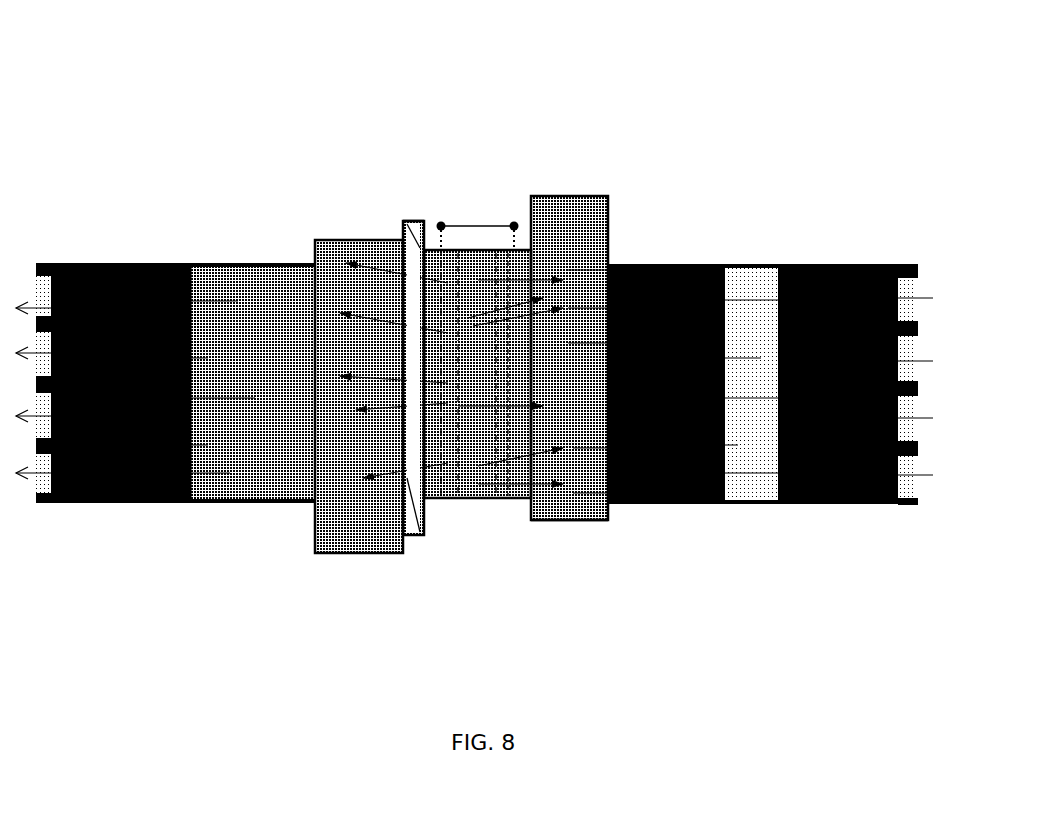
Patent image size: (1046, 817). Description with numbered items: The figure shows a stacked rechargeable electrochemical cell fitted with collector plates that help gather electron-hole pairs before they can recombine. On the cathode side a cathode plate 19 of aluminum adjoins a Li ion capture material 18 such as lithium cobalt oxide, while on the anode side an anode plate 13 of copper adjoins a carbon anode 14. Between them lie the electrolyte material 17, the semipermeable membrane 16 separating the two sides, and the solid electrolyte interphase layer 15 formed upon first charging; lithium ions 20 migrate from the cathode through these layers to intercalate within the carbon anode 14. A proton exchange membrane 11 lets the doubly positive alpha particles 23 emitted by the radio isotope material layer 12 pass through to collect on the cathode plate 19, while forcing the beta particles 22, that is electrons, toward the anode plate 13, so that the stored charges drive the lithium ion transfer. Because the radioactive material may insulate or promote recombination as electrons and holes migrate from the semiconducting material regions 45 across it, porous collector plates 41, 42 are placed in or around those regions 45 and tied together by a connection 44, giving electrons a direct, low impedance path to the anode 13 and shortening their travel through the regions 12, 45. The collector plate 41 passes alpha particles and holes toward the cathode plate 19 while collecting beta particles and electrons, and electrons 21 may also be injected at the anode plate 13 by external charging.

The proton exchange membrane 11 is at (324, 80).
The radio isotope material layer 12 is at (515, 88).
The anode plate 13 is at (611, 528).
The carbon anode 14 is at (665, 602).
The solid electrolyte interphase layer 15 is at (697, 640).
The semipermeable membrane 16 is at (878, 548).
The electrolyte material 17 is at (108, 517).
The Li ion capture material 18 is at (177, 185).
The cathode plate 19 is at (285, 185).
The lithium ions 20 is at (743, 207).
The electrons 21 is at (638, 150).
The beta particles 22 is at (510, 125).
The alpha particles 23 is at (469, 52).
The porous collector plate 41 is at (395, 558).
The porous collector plate 42 is at (563, 585).
The connection 44 is at (378, 17).
The semiconducting material region 45 is at (304, 137).